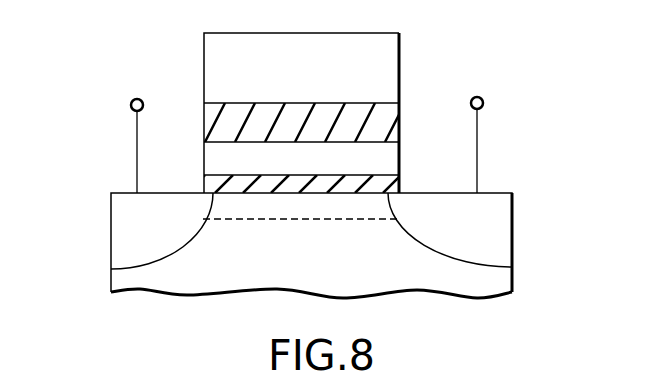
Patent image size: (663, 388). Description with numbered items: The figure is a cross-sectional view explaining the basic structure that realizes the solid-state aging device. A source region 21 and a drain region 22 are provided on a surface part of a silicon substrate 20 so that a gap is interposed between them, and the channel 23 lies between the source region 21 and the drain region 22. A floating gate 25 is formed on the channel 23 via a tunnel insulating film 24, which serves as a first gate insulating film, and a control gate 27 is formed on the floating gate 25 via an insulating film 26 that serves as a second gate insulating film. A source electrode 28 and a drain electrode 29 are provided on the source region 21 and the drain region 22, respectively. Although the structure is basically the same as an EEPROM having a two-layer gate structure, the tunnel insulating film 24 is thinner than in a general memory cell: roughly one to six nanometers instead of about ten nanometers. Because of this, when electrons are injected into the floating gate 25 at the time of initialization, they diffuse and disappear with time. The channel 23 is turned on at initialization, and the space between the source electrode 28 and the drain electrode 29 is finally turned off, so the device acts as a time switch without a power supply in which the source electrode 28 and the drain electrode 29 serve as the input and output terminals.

The silicon substrate 20 is at (503, 283).
The source region 21 is at (112, 238).
The drain region 22 is at (503, 248).
The channel 23 is at (237, 212).
The tunnel insulating film 24 is at (397, 182).
The floating gate 25 is at (397, 148).
The insulating film 26 is at (397, 114).
The control gate 27 is at (397, 71).
The source electrode 28 is at (131, 101).
The drain electrode 29 is at (483, 102).